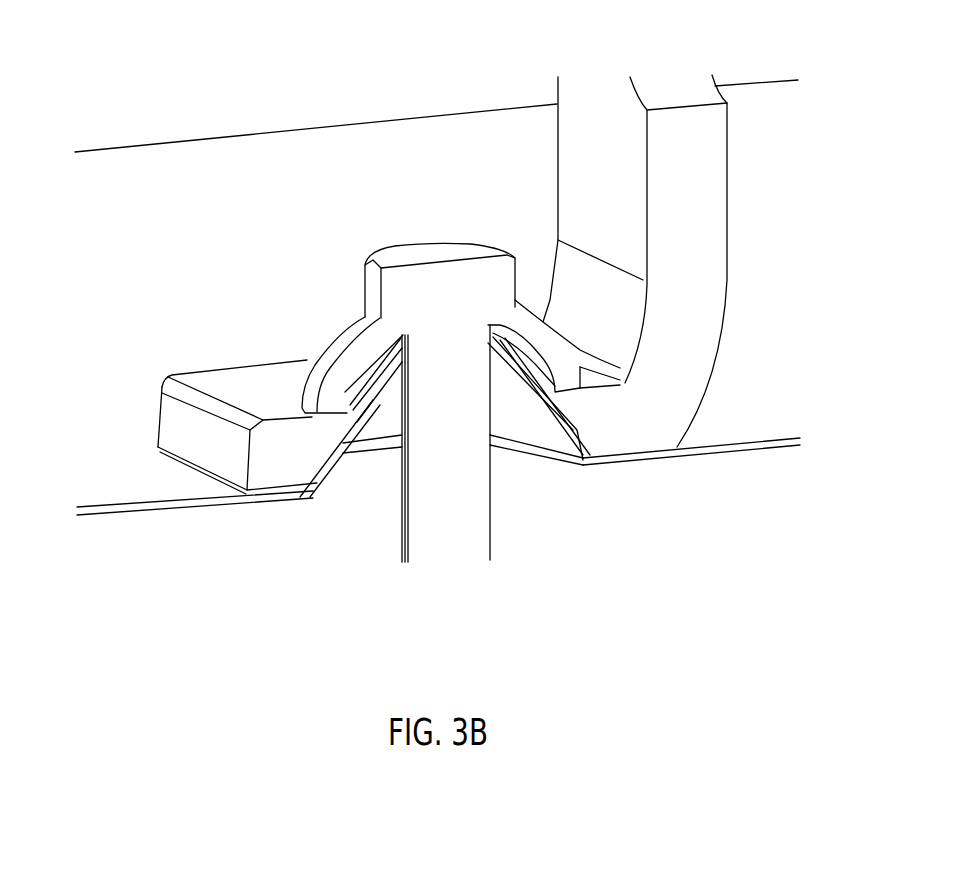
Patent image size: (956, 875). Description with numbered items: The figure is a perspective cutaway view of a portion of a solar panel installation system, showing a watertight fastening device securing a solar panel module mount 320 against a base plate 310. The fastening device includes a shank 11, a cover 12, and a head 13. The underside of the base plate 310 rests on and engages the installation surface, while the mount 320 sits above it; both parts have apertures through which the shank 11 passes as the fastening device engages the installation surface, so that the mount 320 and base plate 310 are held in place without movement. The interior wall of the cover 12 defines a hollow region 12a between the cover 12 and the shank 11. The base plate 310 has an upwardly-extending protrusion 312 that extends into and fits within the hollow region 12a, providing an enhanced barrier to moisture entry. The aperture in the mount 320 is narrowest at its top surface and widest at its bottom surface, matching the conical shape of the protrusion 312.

The shank 11 is at (394, 508).
The cover 12 is at (320, 350).
The hollow region 12a is at (529, 365).
The head 13 is at (361, 288).
The base plate 310 is at (178, 507).
The protrusion 312 is at (523, 398).
The solar panel module mount 320 is at (732, 186).